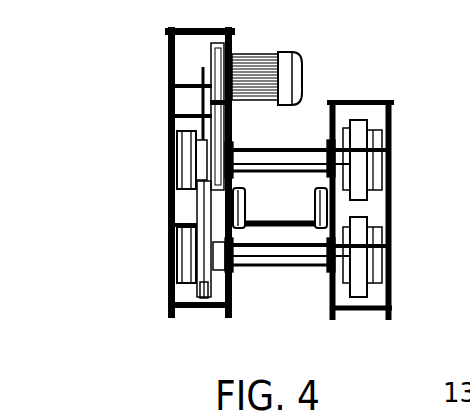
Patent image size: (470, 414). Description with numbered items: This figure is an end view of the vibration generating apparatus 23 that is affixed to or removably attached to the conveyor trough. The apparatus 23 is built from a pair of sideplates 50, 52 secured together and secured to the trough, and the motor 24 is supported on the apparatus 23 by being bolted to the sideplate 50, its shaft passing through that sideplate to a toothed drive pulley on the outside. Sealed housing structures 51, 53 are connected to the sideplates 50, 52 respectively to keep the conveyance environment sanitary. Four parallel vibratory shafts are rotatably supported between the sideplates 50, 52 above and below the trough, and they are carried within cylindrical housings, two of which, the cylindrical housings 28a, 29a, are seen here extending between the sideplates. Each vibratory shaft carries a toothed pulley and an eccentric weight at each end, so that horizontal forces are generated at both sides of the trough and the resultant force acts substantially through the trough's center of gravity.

The vibration generating apparatus 23 is at (328, 45).
The motor 24 is at (303, 77).
The cylindrical housing 28a is at (258, 150).
The cylindrical housing 29a is at (257, 268).
The sideplate 50 is at (228, 318).
The sealed housing structure 51 is at (172, 318).
The sideplate 52 is at (332, 320).
The sealed housing structure 53 is at (390, 320).